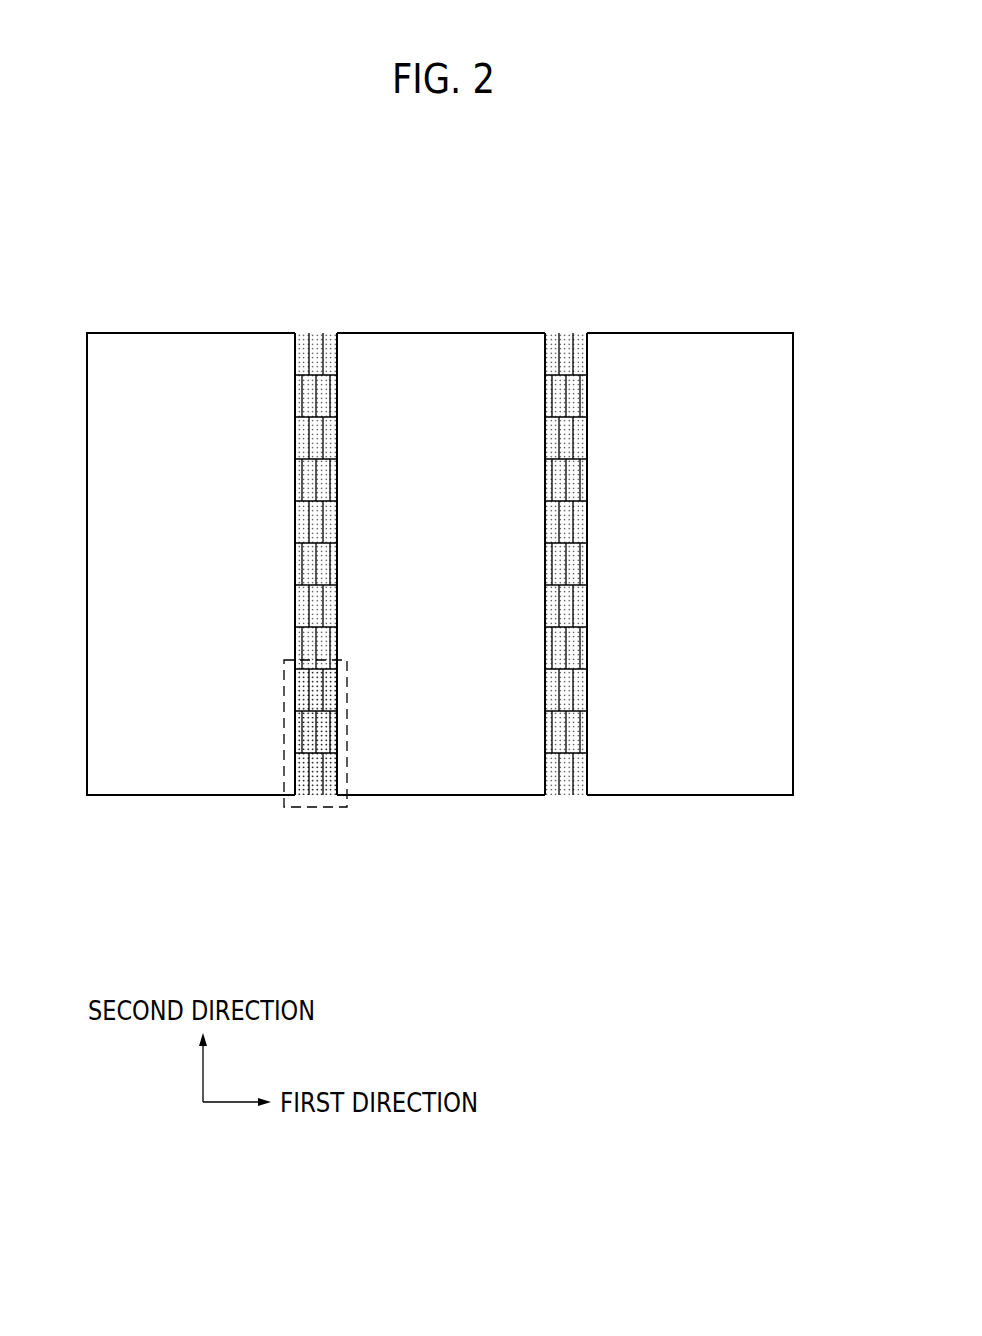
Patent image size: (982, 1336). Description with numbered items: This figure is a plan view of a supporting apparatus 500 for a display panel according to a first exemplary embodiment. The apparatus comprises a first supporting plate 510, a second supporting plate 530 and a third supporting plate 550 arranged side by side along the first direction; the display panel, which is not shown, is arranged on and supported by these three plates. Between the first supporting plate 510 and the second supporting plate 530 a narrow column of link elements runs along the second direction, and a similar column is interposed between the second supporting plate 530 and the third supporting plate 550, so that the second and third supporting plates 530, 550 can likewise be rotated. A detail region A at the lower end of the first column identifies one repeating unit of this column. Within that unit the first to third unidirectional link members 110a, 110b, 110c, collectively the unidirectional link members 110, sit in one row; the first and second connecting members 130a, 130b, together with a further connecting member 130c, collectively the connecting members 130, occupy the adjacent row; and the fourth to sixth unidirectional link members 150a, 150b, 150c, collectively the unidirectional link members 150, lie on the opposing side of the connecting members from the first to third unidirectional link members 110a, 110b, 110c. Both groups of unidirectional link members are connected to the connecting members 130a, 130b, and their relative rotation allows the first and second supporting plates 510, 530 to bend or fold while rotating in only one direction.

The display area / pixel arrangement region 500 is at (707, 261).
The first supporting plate 510 is at (228, 340).
The second supporting plate 530 is at (448, 340).
The third supporting plate 550 is at (676, 340).
The first pixel group 110 is at (713, 825).
The first unidirectional link member 110a is at (303, 785).
The second unidirectional link member 110b is at (317, 783).
The third unidirectional link member 110c is at (332, 783).
The second pixel group 130 is at (713, 955).
The first connecting member 130a is at (307, 730).
The second connecting member 130b is at (327, 732).
The third sub-pixel of second pixel 130c is at (530, 887).
The third pixel group 150 is at (713, 1085).
The fourth unidirectional link member 150a is at (302, 690).
The fifth unidirectional link member 150b is at (318, 695).
The sixth unidirectional link member 150c is at (334, 683).
The enlarged region A is at (349, 666).